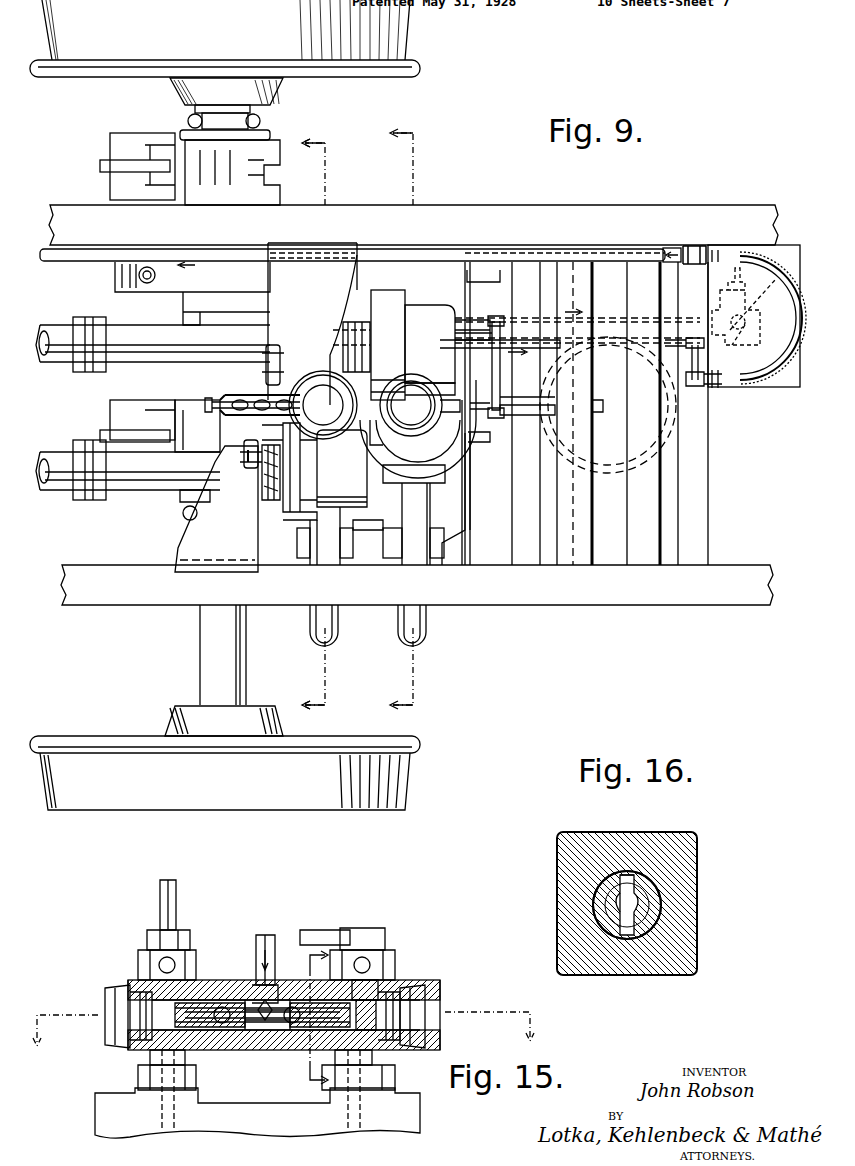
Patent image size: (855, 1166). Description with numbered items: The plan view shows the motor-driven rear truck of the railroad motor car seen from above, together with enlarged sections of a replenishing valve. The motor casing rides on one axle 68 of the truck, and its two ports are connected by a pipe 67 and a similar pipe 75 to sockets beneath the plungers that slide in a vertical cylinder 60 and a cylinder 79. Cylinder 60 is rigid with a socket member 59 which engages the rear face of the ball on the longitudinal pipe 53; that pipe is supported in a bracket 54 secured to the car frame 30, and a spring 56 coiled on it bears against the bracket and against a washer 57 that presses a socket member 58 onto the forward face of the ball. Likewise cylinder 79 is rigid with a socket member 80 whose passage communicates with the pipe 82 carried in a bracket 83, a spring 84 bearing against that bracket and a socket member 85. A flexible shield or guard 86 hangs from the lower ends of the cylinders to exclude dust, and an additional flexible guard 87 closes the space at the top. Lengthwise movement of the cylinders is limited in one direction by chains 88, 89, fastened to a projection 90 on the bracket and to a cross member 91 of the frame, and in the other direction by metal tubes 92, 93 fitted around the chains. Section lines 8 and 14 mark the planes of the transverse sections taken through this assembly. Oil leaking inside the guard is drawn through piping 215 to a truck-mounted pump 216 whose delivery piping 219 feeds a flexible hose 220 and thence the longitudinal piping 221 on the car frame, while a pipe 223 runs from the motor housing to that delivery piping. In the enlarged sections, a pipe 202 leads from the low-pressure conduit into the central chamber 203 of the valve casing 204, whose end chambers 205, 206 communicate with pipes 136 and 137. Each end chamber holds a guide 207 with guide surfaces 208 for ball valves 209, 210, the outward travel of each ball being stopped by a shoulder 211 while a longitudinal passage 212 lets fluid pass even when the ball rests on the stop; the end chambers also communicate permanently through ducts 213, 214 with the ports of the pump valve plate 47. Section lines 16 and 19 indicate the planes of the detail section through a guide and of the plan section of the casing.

In FIG. 9, the section line 8— 8 is at (312, 424).
In FIG. 9, the section line 14— 14 is at (398, 419).
In FIG. 9, the car frame 30 is at (413, 405).
In FIG. 9, the longitudinal piping 221 is at (620, 232).
In FIG. 9, the pipe 82 is at (153, 344).
In FIG. 9, the metal tube 92 is at (270, 392).
In FIG. 9, the chain 88 is at (225, 395).
In FIG. 9, the bracket 83 is at (319, 324).
In FIG. 9, the vertical cylinder 60 is at (322, 380).
In FIG. 9, the spring 84 is at (350, 325).
In FIG. 9, the socket member 85 is at (380, 292).
In FIG. 9, the socket member 80 is at (447, 350).
In FIG. 9, the cylinder 79 is at (415, 382).
In FIG. 9, the flexible shield or guard 86 is at (447, 448).
In FIG. 9, the additional flexible guard 87 is at (386, 446).
In FIG. 9, the chain 89 is at (455, 405).
In FIG. 9, the piping 215 is at (492, 398).
In FIG. 9, the metal tube 93 is at (532, 420).
In FIG. 9, the cross member 91 is at (574, 413).
In FIG. 9, the pipe 223 is at (680, 355).
In FIG. 9, the pump 216 is at (778, 276).
In FIG. 9, the piping 219 is at (725, 358).
In FIG. 9, the hose or flexible connection 220 is at (770, 375).
In FIG. 9, the longitudinal pipe 53 is at (128, 460).
In FIG. 9, the bracket 54 is at (216, 509).
In FIG. 9, the projection 90 is at (238, 440).
In FIG. 9, the washer 57 is at (275, 443).
In FIG. 9, the spring 56 is at (270, 500).
In FIG. 9, the socket member 58 is at (298, 458).
In FIG. 9, the socket member 59 is at (342, 468).
In FIG. 9, the axle 68 is at (215, 651).
In FIG. 9, the pipe 67 is at (316, 627).
In FIG. 9, the pipe 75 is at (405, 627).
In FIG. 16, the valve casing 204 is at (683, 865).
In FIG. 15, the valve casing 204 is at (242, 1048).
In FIG. 16, the guide 207 is at (660, 905).
In FIG. 15, the guide 207 is at (236, 1036).
In FIG. 16, the guide surface 208 is at (660, 925).
In FIG. 16, the longitudinal passage 212 is at (612, 876).
In FIG. 15, the longitudinal passage 212 is at (400, 992).
In FIG. 16, the shoulder 211 is at (610, 895).
In FIG. 15, the shoulder 211 is at (208, 980).
In FIG. 15, the central chamber 203 is at (280, 1046).
In FIG. 15, the ball valve 209 is at (232, 990).
In FIG. 15, the end chamber 205 is at (128, 1015).
In FIG. 15, the end chamber 206 is at (410, 1012).
In FIG. 15, the pipe 136 is at (162, 906).
In FIG. 15, the pipe 202 is at (268, 935).
In FIG. 15, the ball valve 210 is at (295, 975).
In FIG. 15, the pipe 137 is at (335, 930).
In FIG. 15, the section line 16— 16 is at (310, 1022).
In FIG. 15, the section line 19— 19 is at (291, 1042).
In FIG. 15, the duct 213 is at (158, 1130).
In FIG. 15, the duct 214 is at (358, 1130).
In FIG. 15, the valve plate 47 is at (250, 1128).